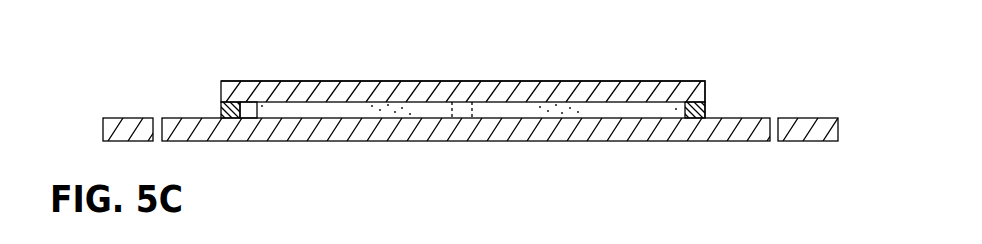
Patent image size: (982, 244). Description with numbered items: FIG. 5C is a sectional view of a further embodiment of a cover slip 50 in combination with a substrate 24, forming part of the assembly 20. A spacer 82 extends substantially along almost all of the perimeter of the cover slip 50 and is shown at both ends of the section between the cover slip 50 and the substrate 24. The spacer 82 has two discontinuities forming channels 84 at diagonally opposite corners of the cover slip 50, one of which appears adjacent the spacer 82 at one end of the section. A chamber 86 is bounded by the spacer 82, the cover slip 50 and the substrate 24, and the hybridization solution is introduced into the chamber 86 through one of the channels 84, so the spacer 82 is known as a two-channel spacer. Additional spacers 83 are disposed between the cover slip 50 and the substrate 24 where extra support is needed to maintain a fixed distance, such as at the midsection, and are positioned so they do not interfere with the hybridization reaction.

The microfluidic device 20 is at (473, 118).
The substrate 24 is at (753, 142).
The cover slip 50 is at (705, 82).
The spacer 82 is at (220, 108).
The additional spacers 83 is at (472, 117).
The channels 84 is at (243, 102).
The chamber 86 is at (587, 112).